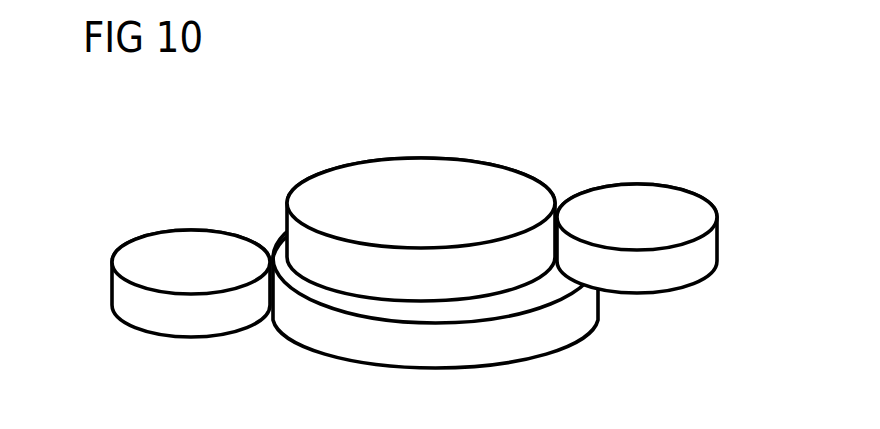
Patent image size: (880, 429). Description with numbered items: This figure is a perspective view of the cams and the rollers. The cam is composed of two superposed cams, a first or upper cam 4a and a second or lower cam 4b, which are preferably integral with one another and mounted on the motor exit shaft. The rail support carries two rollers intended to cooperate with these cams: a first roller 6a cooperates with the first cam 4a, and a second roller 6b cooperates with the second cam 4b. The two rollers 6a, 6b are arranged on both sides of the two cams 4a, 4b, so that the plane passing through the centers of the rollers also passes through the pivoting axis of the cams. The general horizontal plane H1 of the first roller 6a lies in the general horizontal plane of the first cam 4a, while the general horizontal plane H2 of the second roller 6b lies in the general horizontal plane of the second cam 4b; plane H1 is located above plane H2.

The first cam 4a is at (375, 181).
The second cam 4b is at (526, 338).
The first roller 6a is at (689, 198).
The second roller 6b is at (137, 248).
The general horizontal plane of the first roller H1 is at (820, 252).
The general horizontal plane of the second roller H2 is at (70, 290).